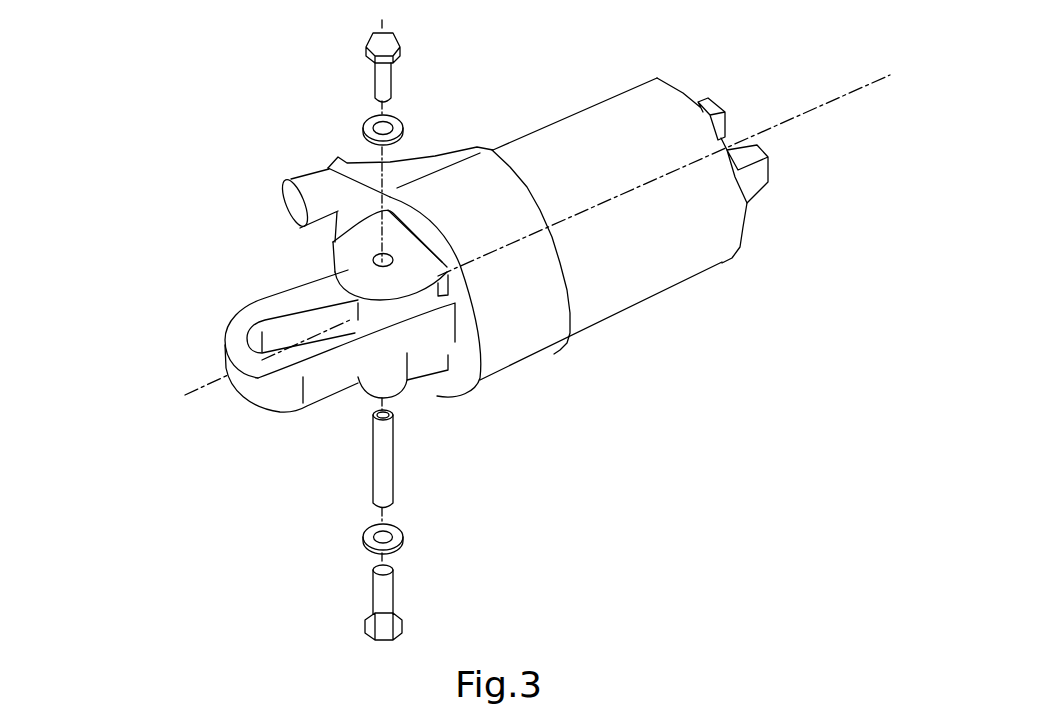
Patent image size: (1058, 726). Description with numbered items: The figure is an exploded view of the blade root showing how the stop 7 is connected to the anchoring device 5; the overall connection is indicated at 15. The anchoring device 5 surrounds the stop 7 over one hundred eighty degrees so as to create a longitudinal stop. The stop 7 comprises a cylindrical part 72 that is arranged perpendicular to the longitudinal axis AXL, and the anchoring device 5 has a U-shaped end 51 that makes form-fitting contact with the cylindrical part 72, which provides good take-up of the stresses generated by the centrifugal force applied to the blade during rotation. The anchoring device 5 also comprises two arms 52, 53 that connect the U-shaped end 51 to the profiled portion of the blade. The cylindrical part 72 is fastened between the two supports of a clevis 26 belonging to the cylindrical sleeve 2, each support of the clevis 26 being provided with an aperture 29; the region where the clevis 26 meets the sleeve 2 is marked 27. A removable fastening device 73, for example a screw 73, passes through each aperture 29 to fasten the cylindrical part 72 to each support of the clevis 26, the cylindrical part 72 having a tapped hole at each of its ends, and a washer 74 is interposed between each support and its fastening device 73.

The cylindrical sleeve 2 is at (545, 150).
The anchoring device 5 is at (190, 342).
The stop 7 is at (369, 326).
The connecting assembly 15 is at (659, 466).
The clevis 26 is at (333, 247).
The shoulder 27 is at (571, 300).
The aperture 29 is at (392, 257).
The U-shaped end 51 is at (255, 392).
The arm 52 is at (758, 182).
The arm 53 is at (713, 97).
The cylindrical part 72 is at (396, 458).
The fastening device 73 is at (376, 33).
The washer 74 is at (365, 125).
The longitudinal axis AXL is at (883, 77).